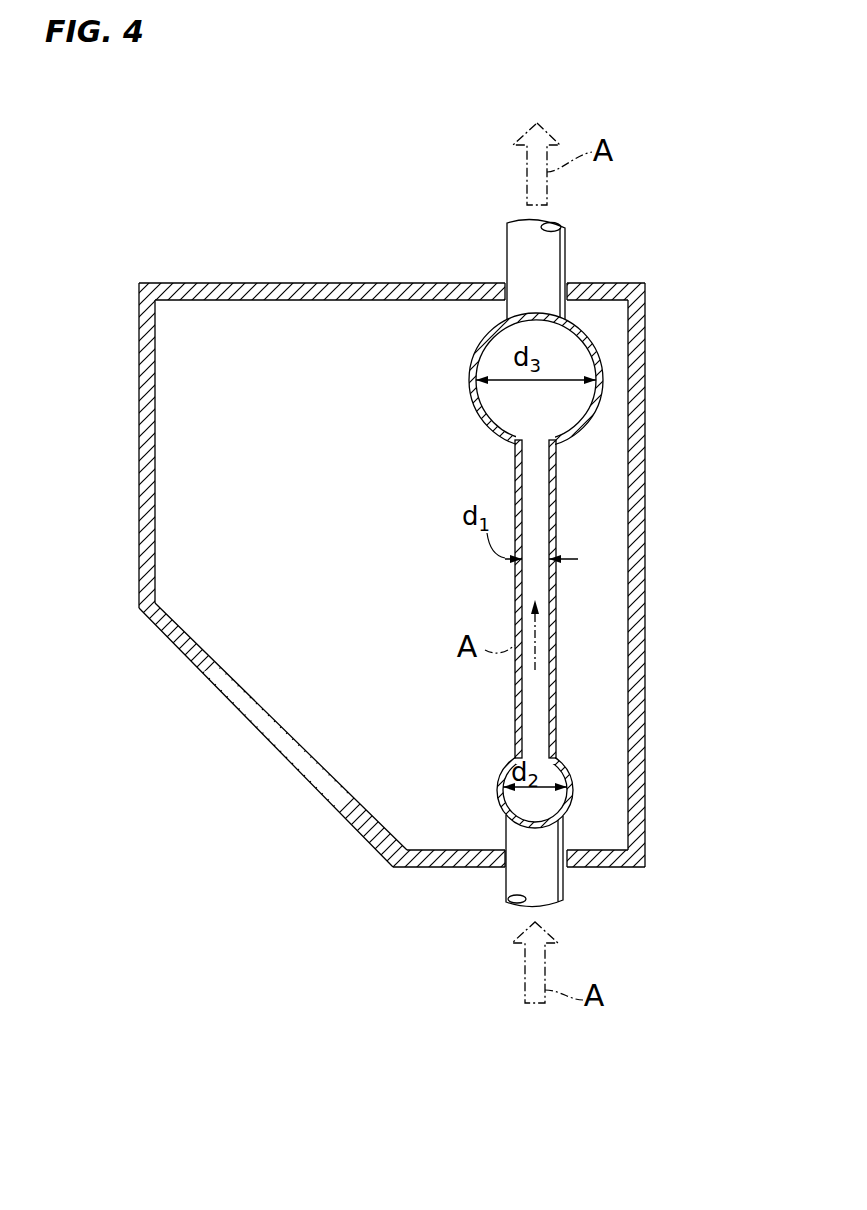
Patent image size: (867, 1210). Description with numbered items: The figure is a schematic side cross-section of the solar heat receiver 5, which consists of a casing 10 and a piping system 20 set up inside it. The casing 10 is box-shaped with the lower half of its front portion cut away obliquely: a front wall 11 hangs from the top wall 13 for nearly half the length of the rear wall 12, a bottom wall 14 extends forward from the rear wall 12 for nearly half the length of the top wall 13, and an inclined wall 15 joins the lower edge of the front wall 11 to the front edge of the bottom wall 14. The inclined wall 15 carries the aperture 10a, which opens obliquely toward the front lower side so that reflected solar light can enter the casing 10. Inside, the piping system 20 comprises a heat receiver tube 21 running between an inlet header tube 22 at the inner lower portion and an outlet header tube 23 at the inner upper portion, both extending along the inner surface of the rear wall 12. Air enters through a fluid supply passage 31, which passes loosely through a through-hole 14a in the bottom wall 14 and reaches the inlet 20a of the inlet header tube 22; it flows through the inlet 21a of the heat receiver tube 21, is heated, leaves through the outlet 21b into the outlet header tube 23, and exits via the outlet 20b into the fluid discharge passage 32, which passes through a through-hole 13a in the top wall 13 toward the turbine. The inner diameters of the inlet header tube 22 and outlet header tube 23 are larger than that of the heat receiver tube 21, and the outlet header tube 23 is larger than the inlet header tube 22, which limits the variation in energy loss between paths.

The solar heat receiver 5 is at (216, 150).
The casing 10 is at (648, 280).
The aperture 10a is at (257, 775).
The front wall 11 is at (139, 455).
The rear wall 12 is at (646, 495).
The top wall 13 is at (268, 283).
The through-hole 13a is at (508, 292).
The bottom wall 14 is at (435, 868).
The through-hole 14a is at (508, 873).
The inclined wall 15 is at (170, 645).
The piping system 20 is at (575, 553).
The inlet 20a is at (540, 809).
The outlet 20b is at (540, 308).
The heat receiver tube 21 is at (557, 625).
The inlet of heat receiver tube 21a is at (512, 745).
The outlet of heat receiver tube 21b is at (512, 455).
The inlet header tube 22 is at (573, 770).
The outlet header tube 23 is at (602, 366).
The fluid supply passage 31 is at (548, 890).
The fluid discharge passage 32 is at (513, 240).